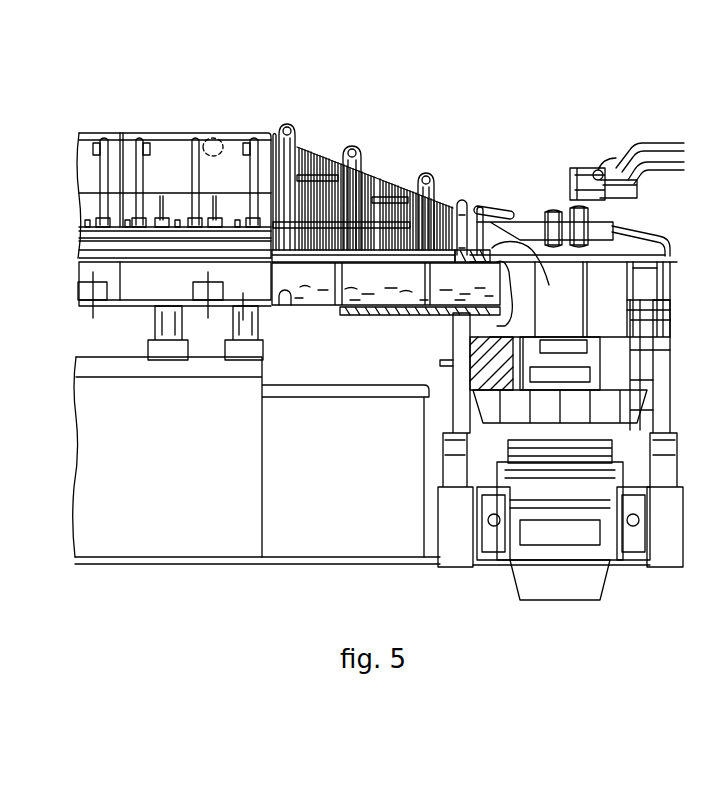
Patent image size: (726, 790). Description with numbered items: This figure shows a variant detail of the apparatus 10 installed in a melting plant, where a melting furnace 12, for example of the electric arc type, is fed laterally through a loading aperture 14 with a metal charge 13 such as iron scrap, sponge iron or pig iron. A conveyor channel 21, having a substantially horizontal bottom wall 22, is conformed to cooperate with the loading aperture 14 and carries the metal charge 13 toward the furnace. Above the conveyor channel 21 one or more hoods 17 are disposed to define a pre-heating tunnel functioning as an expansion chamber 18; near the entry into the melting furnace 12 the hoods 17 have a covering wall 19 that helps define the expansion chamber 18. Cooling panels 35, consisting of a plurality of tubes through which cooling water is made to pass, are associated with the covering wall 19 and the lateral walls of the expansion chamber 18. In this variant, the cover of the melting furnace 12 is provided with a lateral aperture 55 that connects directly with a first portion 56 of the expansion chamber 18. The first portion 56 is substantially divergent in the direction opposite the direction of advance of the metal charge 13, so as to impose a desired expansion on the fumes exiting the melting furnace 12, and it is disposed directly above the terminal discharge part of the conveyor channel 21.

The apparatus 10 is at (363, 157).
The melting furnace 12 is at (475, 378).
The metal charge 13 is at (318, 288).
The loading aperture 14 is at (460, 300).
The hoods 17 is at (168, 132).
The expansion chamber 18 is at (218, 128).
The covering wall 19 is at (242, 133).
The conveyor channel 21 is at (135, 310).
The bottom wall 22 is at (282, 310).
The cooling panels 35 is at (383, 182).
The lateral aperture 55 is at (531, 276).
The first portion of the expansion chamber 56 is at (443, 220).